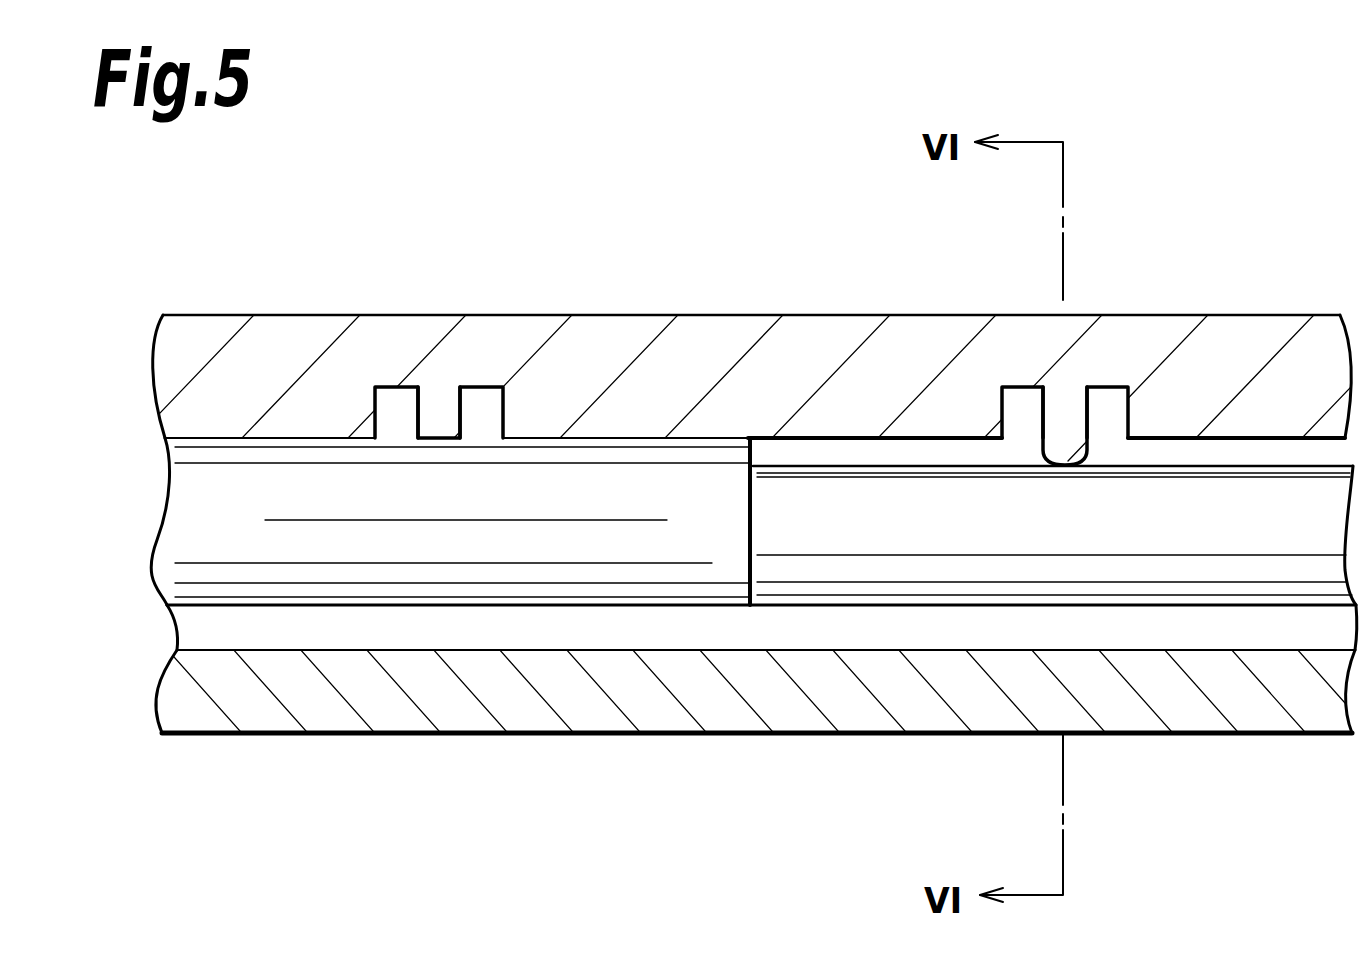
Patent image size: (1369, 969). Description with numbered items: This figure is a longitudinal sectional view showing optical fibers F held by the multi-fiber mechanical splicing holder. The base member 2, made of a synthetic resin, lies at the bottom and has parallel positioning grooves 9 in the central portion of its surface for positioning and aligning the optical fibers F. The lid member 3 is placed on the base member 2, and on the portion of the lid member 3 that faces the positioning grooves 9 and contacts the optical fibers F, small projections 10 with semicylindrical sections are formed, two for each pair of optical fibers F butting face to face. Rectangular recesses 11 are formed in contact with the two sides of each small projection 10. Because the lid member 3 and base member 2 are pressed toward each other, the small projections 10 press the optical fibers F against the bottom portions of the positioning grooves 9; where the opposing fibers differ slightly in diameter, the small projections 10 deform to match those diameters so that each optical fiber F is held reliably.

The base member 2 is at (1207, 713).
The lid member 3 is at (1273, 337).
The positioning grooves 9 is at (907, 630).
The small projection 10 is at (417, 421).
The recess 11 is at (483, 400).
The optical fibers F is at (610, 478).